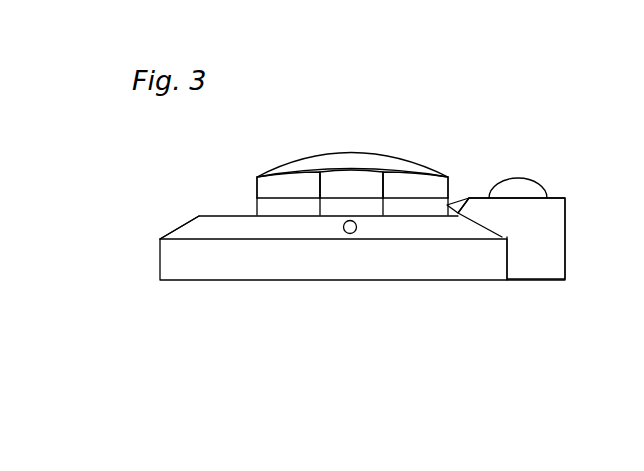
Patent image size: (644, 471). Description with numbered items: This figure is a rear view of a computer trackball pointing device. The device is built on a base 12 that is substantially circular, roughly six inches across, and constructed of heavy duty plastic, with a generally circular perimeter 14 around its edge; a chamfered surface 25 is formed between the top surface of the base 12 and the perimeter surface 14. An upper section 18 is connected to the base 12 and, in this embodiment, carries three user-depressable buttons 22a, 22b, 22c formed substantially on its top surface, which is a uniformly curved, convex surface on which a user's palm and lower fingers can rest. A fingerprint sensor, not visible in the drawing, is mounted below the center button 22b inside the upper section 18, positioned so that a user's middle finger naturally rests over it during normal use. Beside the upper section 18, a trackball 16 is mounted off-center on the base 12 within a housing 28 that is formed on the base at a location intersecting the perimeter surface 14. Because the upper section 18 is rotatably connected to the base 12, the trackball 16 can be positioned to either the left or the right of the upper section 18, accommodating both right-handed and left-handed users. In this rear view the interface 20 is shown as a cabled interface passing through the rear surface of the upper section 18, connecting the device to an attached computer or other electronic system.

The base 12 is at (464, 267).
The perimeter 14 is at (157, 263).
The trackball 16 is at (530, 182).
The upper section 18 is at (302, 160).
The interface 20 is at (352, 234).
The user-depressable button 22a is at (420, 180).
The user-depressable button 22b is at (358, 178).
The user-depressable button 22c is at (277, 180).
The chamfered surface 25 is at (182, 225).
The housing 28 is at (547, 232).